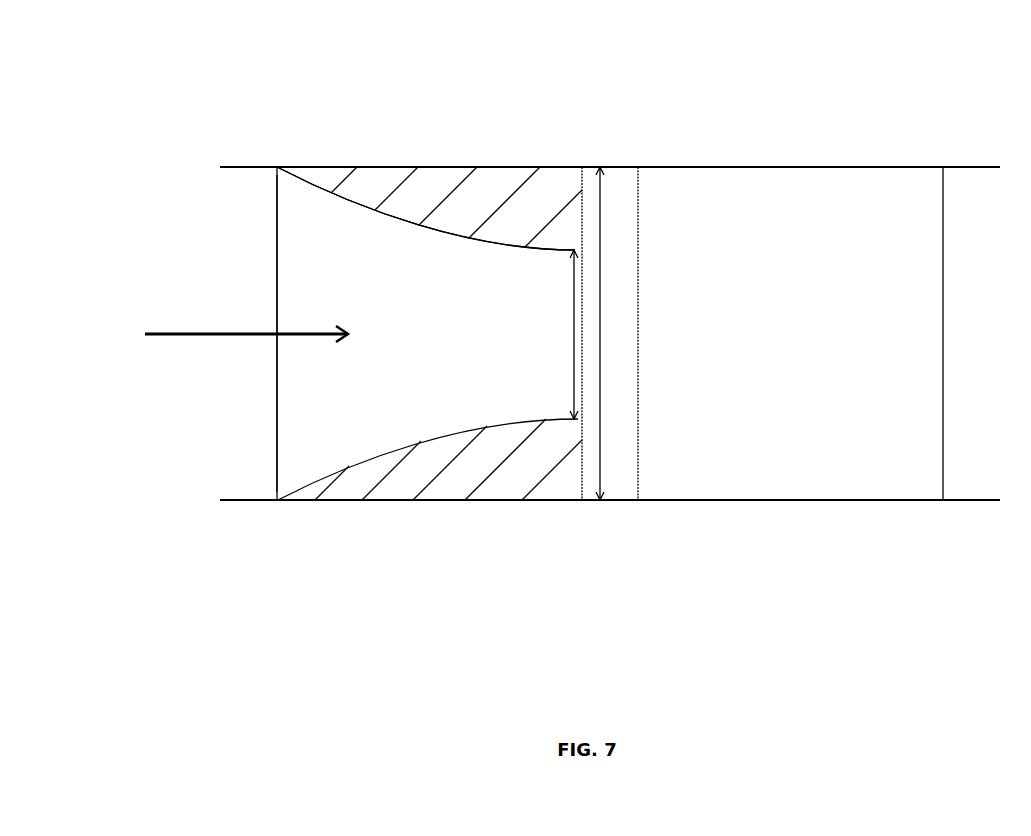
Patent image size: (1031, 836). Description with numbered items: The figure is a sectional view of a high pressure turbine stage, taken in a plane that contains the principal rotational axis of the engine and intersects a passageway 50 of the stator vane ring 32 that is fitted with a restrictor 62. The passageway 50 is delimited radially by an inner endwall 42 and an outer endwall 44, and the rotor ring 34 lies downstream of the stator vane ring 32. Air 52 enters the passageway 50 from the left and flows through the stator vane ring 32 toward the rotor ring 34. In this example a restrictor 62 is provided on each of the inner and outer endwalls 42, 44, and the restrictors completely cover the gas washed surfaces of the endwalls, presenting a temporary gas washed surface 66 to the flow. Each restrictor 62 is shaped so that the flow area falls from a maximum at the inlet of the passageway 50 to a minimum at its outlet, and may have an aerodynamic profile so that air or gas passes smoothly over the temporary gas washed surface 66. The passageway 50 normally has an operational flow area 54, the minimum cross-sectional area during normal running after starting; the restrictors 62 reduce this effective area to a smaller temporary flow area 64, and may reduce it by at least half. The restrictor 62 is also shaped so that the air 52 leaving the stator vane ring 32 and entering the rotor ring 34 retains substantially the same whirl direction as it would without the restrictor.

The stator vane ring 32 is at (492, 500).
The rotor ring 34 is at (743, 500).
The inner endwall 42 is at (442, 501).
The outer endwall 44 is at (443, 167).
The passageway 50 is at (360, 257).
The air 52 is at (193, 333).
The operational flow area 54 is at (600, 247).
The restrictor 62 is at (413, 473).
The temporary flow area 64 is at (575, 302).
The temporary gas washed surface 66 is at (355, 203).